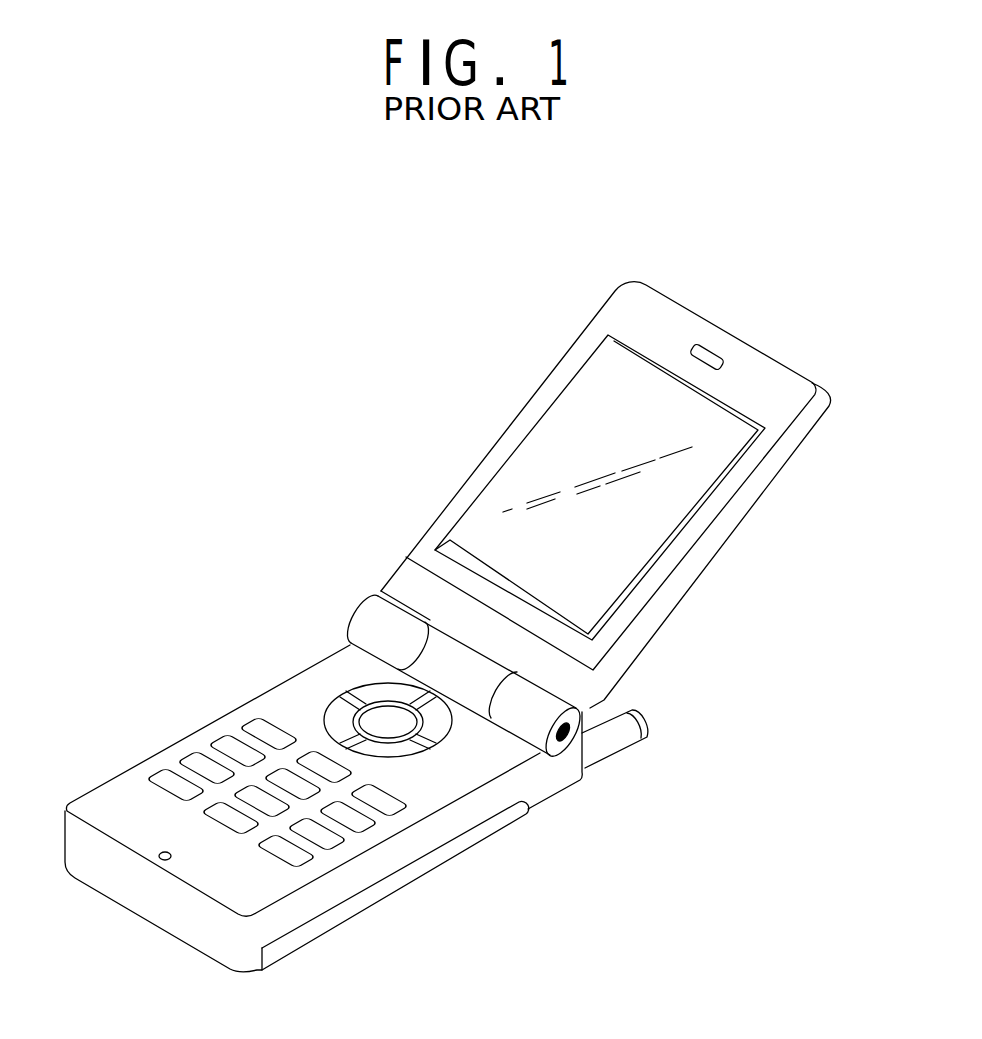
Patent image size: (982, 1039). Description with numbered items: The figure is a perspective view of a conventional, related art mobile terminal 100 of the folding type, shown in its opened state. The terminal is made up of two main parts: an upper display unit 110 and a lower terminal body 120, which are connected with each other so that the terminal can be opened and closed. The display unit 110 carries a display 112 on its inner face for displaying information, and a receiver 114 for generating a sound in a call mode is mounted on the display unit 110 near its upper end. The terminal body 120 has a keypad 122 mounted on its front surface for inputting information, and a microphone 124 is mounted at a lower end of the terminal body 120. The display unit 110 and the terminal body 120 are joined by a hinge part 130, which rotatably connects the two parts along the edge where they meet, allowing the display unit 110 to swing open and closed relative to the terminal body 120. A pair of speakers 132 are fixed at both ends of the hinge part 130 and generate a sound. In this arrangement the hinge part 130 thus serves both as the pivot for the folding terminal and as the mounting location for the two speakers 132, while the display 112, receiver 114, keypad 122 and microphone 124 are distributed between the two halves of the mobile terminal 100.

The mobile terminal 100 is at (143, 370).
The display unit 110 is at (730, 560).
The display 112 is at (552, 448).
The receiver 114 is at (712, 355).
The terminal body 120 is at (477, 857).
The keypad 122 is at (302, 857).
The microphone 124 is at (160, 857).
The hinge part 130 is at (437, 657).
The speakers 132 is at (355, 613).